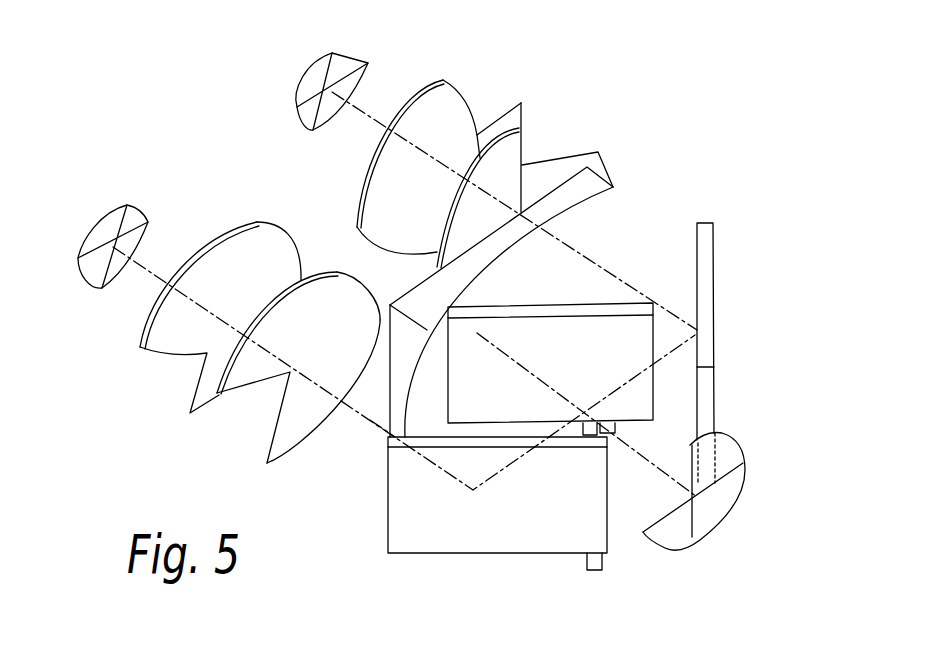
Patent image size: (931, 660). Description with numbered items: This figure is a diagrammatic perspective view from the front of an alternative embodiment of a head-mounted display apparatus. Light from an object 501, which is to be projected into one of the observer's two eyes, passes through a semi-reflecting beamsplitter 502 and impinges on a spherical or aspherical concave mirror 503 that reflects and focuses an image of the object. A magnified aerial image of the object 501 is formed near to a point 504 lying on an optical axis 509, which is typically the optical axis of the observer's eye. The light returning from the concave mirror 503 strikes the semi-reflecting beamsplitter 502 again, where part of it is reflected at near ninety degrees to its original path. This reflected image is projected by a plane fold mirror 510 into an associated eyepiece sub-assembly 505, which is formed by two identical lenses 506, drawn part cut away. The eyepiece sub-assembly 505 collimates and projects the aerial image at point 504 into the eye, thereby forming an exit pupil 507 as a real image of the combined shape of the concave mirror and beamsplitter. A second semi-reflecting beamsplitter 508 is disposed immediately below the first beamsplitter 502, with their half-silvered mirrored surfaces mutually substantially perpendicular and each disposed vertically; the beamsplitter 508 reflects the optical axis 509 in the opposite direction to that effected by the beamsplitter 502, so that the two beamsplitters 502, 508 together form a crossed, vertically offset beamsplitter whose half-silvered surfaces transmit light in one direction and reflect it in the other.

The object 501 is at (723, 515).
The semi-reflecting beamsplitter 502 is at (618, 302).
The concave mirror 503 is at (605, 185).
The point (aerial image) 504 is at (370, 423).
The eyepiece sub-assembly 505 is at (482, 102).
The lenses 506 is at (282, 225).
The exit pupil 507 is at (306, 80).
The second semi-reflecting beamsplitter 508 is at (598, 570).
The optical axis 509 is at (377, 113).
The plane fold mirror 510 is at (715, 283).